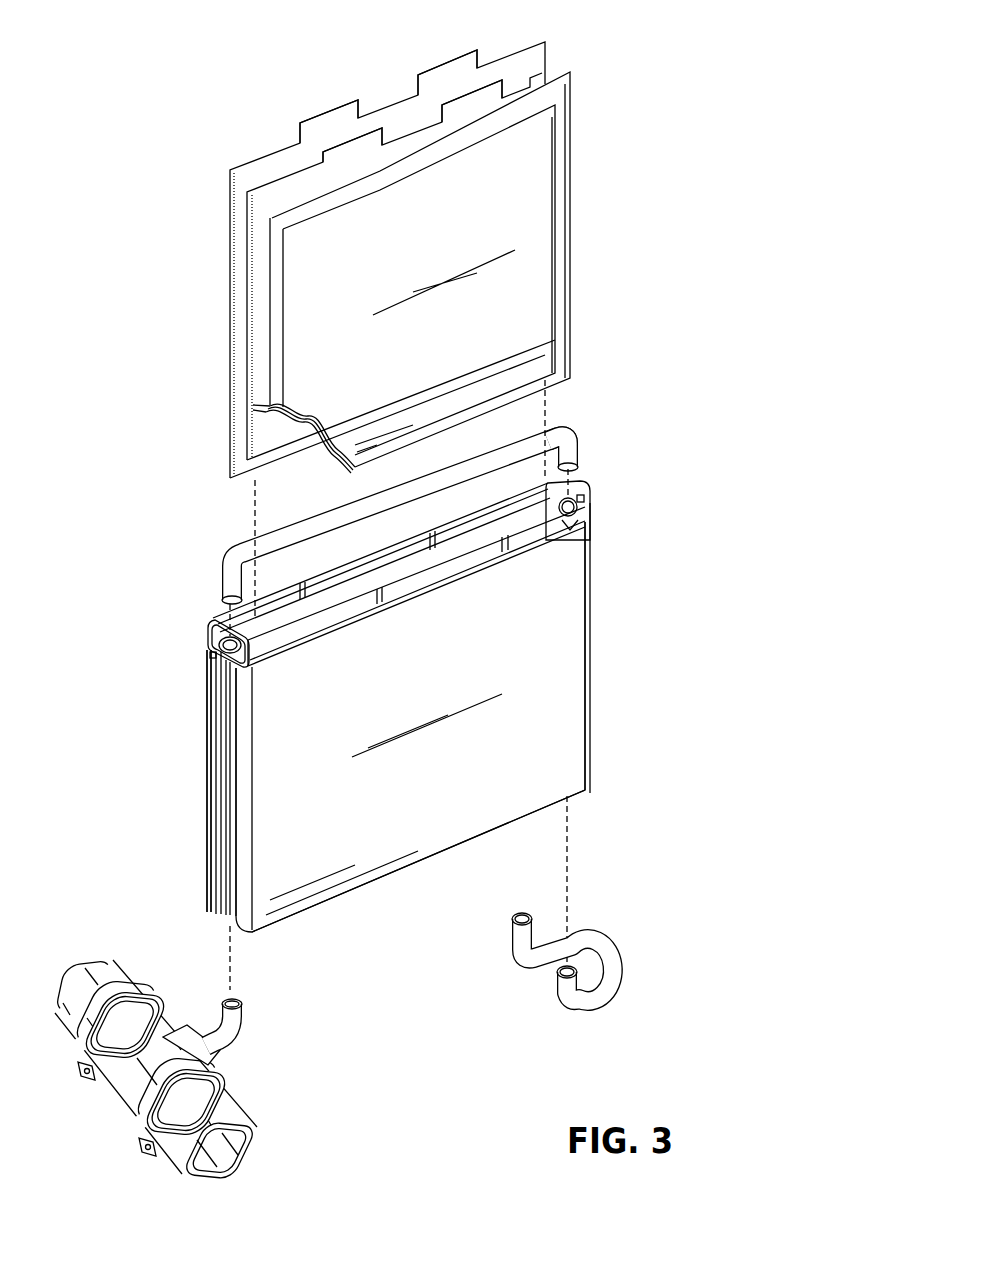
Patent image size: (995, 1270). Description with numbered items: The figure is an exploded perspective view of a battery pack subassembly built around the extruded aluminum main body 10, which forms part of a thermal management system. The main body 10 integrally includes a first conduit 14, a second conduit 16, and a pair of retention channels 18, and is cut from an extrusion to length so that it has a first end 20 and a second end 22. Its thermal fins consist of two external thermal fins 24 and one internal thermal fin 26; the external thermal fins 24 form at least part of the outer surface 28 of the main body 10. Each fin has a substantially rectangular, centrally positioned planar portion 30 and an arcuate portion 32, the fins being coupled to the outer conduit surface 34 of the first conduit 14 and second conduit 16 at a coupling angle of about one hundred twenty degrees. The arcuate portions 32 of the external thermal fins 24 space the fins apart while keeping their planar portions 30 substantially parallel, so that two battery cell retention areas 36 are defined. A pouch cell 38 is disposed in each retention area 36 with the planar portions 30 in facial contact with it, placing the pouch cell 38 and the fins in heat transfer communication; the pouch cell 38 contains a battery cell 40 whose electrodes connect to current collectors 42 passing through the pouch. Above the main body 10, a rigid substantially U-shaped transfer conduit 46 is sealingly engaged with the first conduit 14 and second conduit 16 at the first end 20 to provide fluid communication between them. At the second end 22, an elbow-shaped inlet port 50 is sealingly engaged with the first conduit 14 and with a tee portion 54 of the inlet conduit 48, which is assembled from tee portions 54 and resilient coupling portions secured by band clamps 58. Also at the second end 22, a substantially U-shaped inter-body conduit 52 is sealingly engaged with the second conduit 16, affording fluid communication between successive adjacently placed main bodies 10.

The main body 10 is at (600, 601).
The first conduit 14 is at (216, 641).
The second conduit 16 is at (573, 497).
The retention channels 18 is at (586, 498).
The first end 20 is at (468, 473).
The second end 22 is at (426, 866).
The external thermal fins 24 is at (418, 538).
The internal thermal fin 26 is at (470, 550).
The outer surface 28 is at (437, 781).
The planar portion 30 is at (465, 836).
The arcuate portion 32 is at (593, 655).
The outer conduit surface 34 is at (591, 527).
The battery cell retention area 36 is at (353, 578).
The pouch cell 38 is at (578, 80).
The battery cell 40 is at (351, 443).
The current collector 42 is at (372, 140).
The transfer conduit 46 is at (579, 428).
The inlet conduit 48 is at (151, 1069).
The inlet port 50 is at (245, 1013).
The inter-body conduit 52 is at (629, 948).
The tee portion 54 is at (191, 1045).
The band clamp 58 is at (117, 1109).